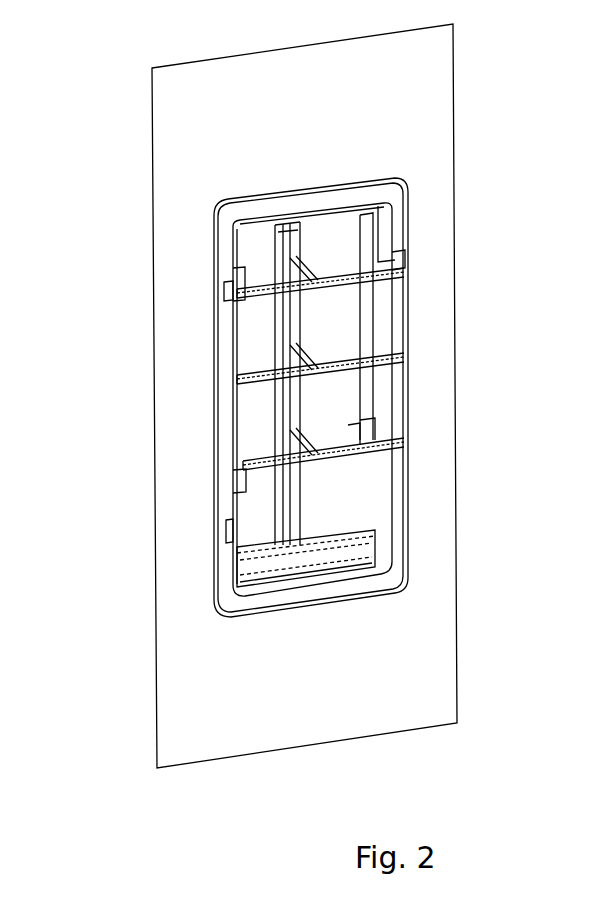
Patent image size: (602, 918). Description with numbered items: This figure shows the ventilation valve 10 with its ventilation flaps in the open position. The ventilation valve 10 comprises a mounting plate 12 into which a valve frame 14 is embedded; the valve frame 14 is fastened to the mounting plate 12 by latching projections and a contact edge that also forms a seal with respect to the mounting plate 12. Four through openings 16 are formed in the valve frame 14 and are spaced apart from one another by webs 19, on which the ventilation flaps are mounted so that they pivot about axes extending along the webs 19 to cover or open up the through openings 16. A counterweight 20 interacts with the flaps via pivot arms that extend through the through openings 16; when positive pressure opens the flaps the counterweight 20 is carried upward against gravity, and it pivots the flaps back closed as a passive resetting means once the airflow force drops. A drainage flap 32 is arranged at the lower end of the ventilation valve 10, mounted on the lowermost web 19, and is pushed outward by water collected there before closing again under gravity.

The ventilation valve 10 is at (442, 132).
The mounting plate 12 is at (306, 161).
The valve frame 14 is at (398, 257).
The through openings 16 is at (255, 515).
The webs 19 is at (355, 352).
The counterweight 20 is at (297, 400).
The drainage flap 32 is at (355, 562).